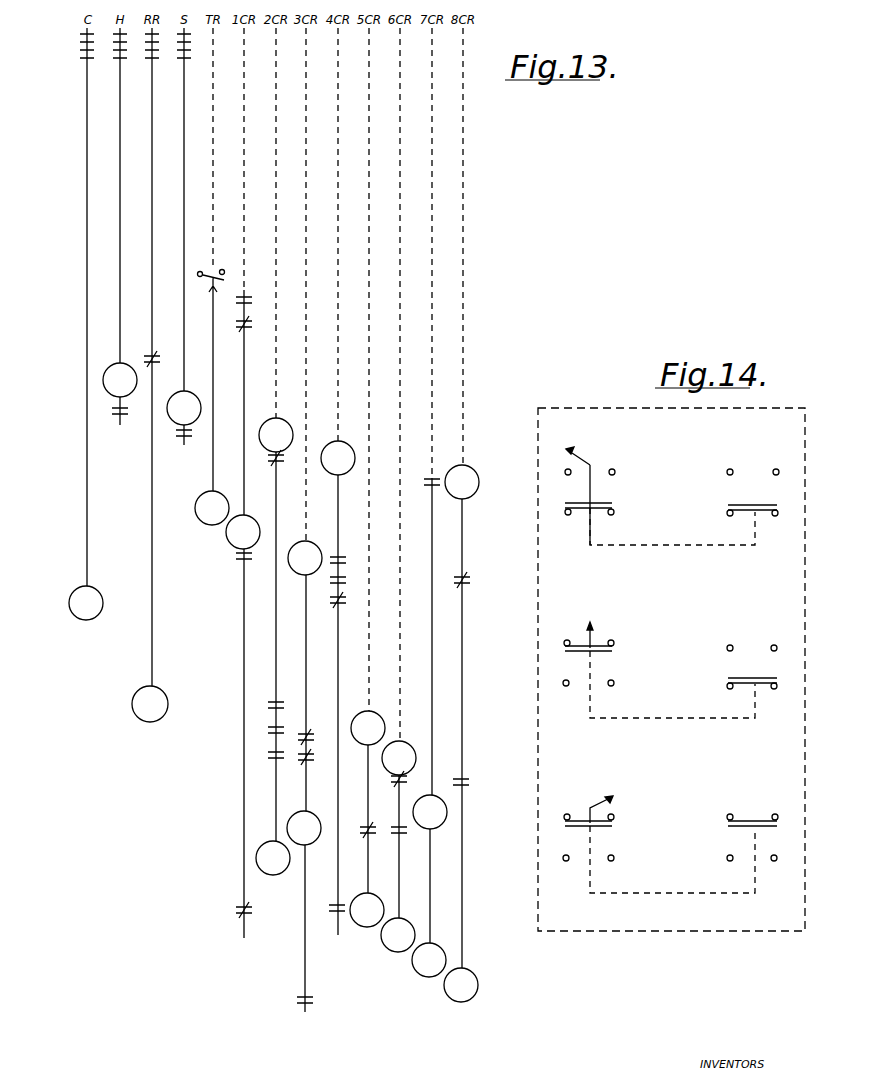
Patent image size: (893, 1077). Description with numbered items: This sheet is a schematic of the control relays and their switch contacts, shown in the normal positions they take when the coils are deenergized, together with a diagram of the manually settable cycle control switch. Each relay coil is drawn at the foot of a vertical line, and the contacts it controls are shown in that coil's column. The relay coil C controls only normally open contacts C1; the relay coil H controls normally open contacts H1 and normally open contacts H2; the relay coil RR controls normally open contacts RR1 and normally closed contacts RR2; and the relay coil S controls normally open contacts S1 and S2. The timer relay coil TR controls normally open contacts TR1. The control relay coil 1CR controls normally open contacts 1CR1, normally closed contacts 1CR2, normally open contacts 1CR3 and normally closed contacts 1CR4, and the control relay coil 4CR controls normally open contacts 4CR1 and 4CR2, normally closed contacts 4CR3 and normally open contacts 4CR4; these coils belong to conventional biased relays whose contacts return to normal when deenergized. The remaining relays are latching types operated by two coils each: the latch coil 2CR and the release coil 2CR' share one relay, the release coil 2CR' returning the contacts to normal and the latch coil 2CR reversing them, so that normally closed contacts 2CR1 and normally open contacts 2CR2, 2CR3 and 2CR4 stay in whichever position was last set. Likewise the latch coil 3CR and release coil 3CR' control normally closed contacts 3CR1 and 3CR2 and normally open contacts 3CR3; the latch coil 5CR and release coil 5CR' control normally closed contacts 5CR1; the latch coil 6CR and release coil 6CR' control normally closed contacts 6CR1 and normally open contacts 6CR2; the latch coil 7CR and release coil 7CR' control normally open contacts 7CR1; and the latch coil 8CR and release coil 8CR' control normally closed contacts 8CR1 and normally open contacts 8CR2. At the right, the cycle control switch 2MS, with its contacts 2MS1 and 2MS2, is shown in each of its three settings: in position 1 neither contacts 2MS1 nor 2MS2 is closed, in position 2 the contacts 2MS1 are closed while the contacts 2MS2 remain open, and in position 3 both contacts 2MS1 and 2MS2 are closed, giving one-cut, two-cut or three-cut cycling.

In FIG. 13, the relay coil C is at (86, 324).
In FIG. 13, the normally open contacts C1 is at (78, 46).
In FIG. 13, the relay coil H is at (120, 226).
In FIG. 13, the normally open contacts H1 is at (110, 56).
In FIG. 13, the normally open contacts H2 is at (112, 412).
In FIG. 13, the relay coil RR is at (150, 375).
In FIG. 13, the normally open contacts RR1 is at (142, 56).
In FIG. 13, the normally closed contacts RR2 is at (146, 358).
In FIG. 13, the relay coil S is at (184, 236).
In FIG. 13, the normally open contacts S1 is at (174, 56).
In FIG. 13, the normally open contacts S2 is at (176, 434).
In FIG. 13, the timer relay coil TR is at (212, 276).
In FIG. 13, the normally open contacts TR1 is at (220, 270).
In FIG. 13, the control relay coil 1CR is at (243, 483).
In FIG. 13, the normally open contacts 1CR1 is at (258, 293).
In FIG. 13, the normally closed contacts 1CR2 is at (244, 330).
In FIG. 13, the normally open contacts 1CR3 is at (236, 556).
In FIG. 13, the normally closed contacts 1CR4 is at (236, 910).
In FIG. 13, the latch coil 2CR is at (273, 663).
In FIG. 13, the release coil 2CR' is at (276, 240).
In FIG. 13, the normally closed contacts 2CR1 is at (268, 460).
In FIG. 13, the normally open contacts 2CR2 is at (270, 704).
In FIG. 13, the normally open contacts 2CR3 is at (270, 730).
In FIG. 13, the normally open contacts 2CR4 is at (270, 756).
In FIG. 13, the latch coil 3CR is at (305, 301).
In FIG. 13, the release coil 3CR' is at (304, 793).
In FIG. 13, the normally closed contacts 3CR1 is at (310, 734).
In FIG. 13, the normally closed contacts 3CR2 is at (314, 758).
In FIG. 13, the normally open contacts 3CR3 is at (297, 1002).
In FIG. 13, the control relay coil 4CR is at (338, 481).
In FIG. 13, the normally open contacts 4CR1 is at (346, 562).
In FIG. 13, the normally open contacts 4CR2 is at (346, 584).
In FIG. 13, the normally closed contacts 4CR3 is at (346, 598).
In FIG. 13, the normally open contacts 4CR4 is at (329, 910).
In FIG. 13, the latch coil 5CR is at (368, 386).
In FIG. 13, the release coil 5CR' is at (367, 836).
In FIG. 13, the normally closed contacts 5CR1 is at (360, 830).
In FIG. 13, the latch coil 6CR is at (399, 401).
In FIG. 13, the release coil 6CR' is at (398, 863).
In FIG. 13, the normally closed contacts 6CR1 is at (391, 782).
In FIG. 13, the normally open contacts 6CR2 is at (391, 832).
In FIG. 13, the latch coil 7CR is at (430, 428).
In FIG. 13, the release coil 7CR' is at (429, 903).
In FIG. 13, the normally open contacts 7CR1 is at (424, 482).
In FIG. 13, the latch coil 8CR is at (462, 263).
In FIG. 13, the release coil 8CR' is at (461, 750).
In FIG. 13, the normally closed contacts 8CR1 is at (470, 582).
In FIG. 13, the normally open contacts 8CR2 is at (469, 784).
In FIG. 14, the manually settable switch 2MS is at (648, 545).
In FIG. 14, the contacts 2MS1 is at (612, 468).
In FIG. 14, the contacts 2MS2 is at (746, 472).
In FIG. 14, the position 1 is at (645, 650).
In FIG. 14, the position 2 is at (663, 631).
In FIG. 14, the position 3 is at (695, 650).